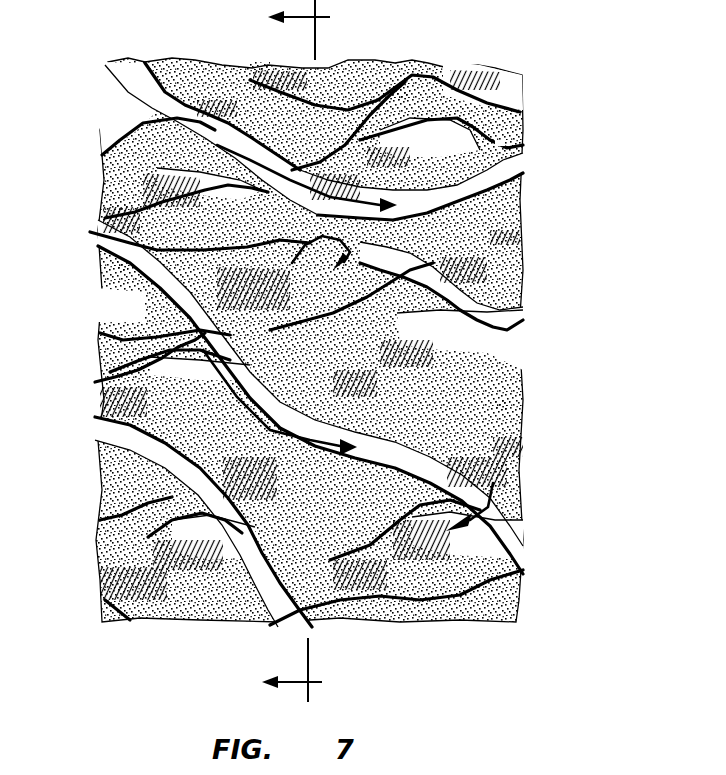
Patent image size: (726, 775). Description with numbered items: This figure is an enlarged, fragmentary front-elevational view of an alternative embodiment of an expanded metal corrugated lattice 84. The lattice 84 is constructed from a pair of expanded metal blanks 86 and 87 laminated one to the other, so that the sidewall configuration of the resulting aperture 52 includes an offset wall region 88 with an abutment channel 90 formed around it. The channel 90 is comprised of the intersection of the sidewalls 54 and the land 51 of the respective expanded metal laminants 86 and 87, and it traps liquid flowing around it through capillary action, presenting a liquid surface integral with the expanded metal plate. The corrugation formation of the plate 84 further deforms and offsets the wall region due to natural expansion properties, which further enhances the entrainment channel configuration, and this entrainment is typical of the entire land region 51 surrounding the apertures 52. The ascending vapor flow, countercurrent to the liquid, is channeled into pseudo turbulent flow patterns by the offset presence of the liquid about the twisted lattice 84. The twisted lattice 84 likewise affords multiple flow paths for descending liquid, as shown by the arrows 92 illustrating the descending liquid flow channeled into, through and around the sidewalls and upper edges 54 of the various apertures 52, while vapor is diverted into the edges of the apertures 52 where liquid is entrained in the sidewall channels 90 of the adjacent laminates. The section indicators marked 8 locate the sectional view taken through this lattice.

The section line 8- 8 is at (296, 353).
The land 51 is at (400, 97).
The aperture 52 is at (457, 340).
The sidewalls and upper edges 54 is at (120, 267).
The lattice 84 is at (565, 232).
The expanded metal blank 86 is at (500, 407).
The expanded metal blank 87 is at (500, 467).
The offset wall region 88 is at (120, 210).
The abutment channel 90 is at (500, 143).
The arrows 92 is at (255, 62).